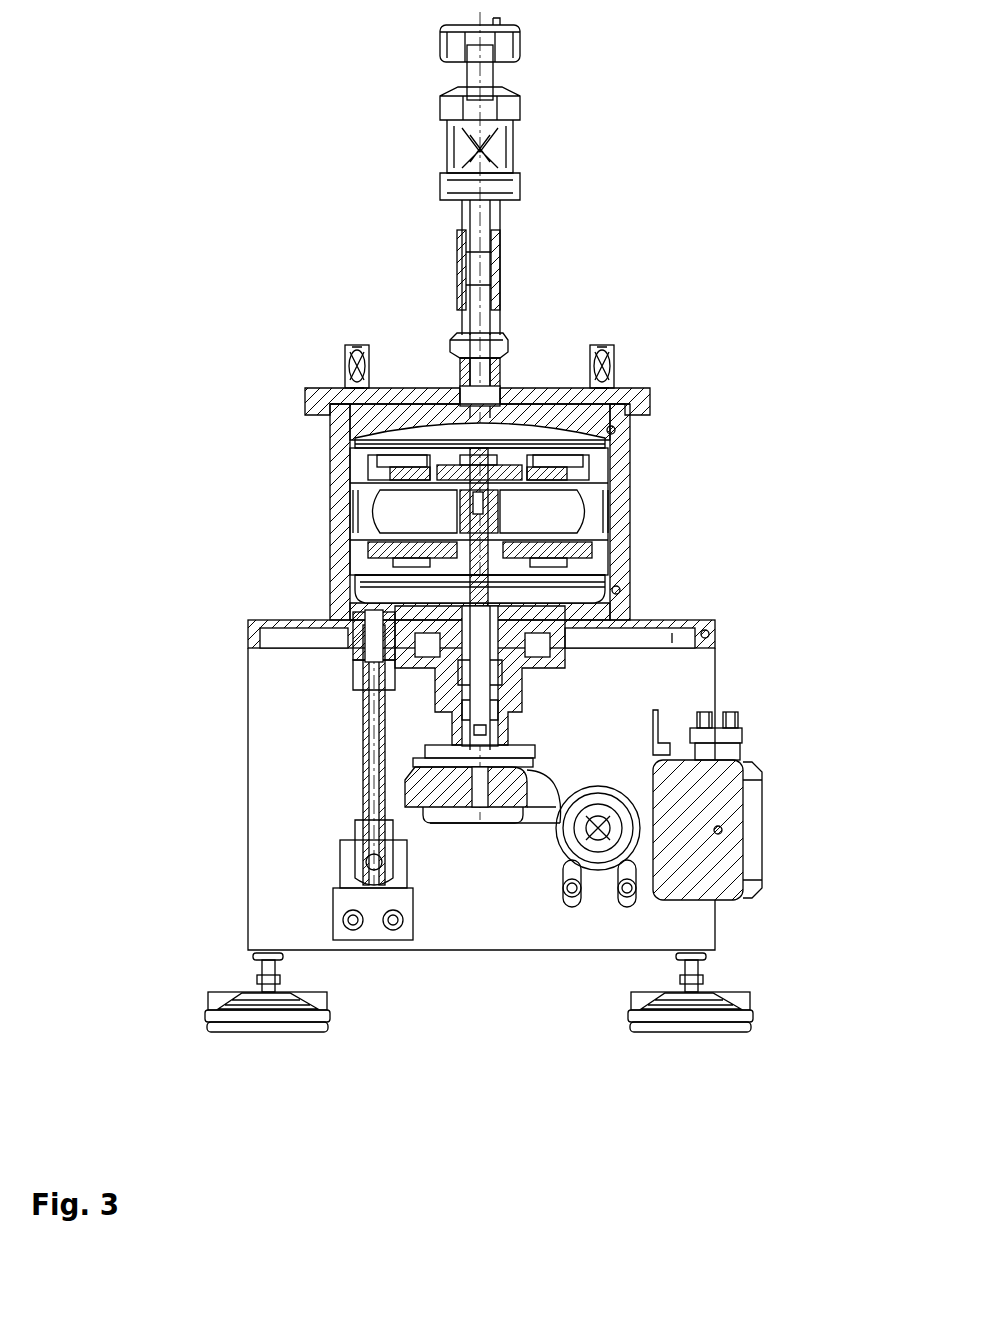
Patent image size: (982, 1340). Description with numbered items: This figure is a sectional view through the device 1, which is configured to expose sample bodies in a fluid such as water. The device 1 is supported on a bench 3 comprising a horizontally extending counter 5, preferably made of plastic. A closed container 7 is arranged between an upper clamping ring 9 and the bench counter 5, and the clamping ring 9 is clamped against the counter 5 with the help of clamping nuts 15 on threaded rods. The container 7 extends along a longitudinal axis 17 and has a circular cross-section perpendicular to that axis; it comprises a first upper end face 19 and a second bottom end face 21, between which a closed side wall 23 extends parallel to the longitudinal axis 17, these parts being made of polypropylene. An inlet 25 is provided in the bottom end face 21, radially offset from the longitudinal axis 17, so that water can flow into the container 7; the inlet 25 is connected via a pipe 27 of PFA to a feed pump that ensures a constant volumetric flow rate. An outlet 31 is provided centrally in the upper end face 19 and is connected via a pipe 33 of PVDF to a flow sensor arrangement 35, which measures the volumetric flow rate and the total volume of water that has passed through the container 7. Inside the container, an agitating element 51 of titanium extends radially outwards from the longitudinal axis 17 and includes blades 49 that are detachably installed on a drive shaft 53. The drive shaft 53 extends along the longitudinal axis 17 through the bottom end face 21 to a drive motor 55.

The device 1 is at (294, 356).
The bench 3 is at (778, 692).
The counter 5 is at (713, 622).
The closed container 7 is at (658, 467).
The upper clamping ring 9 is at (635, 398).
The clamping nuts 15 is at (352, 340).
The longitudinal axis 17 is at (490, 290).
The first upper end face 19 is at (612, 430).
The second bottom end face 21 is at (628, 590).
The closed side wall 23 is at (330, 465).
The inlet 25 is at (355, 630).
The pipe 27 is at (357, 765).
The outlet 31 is at (492, 392).
The pipe 33 is at (500, 195).
The flow sensor arrangement 35 is at (718, 830).
The blades 49 is at (458, 505).
The agitating element 51 is at (375, 513).
The drive shaft 53 is at (460, 598).
The drive motor 55 is at (467, 812).